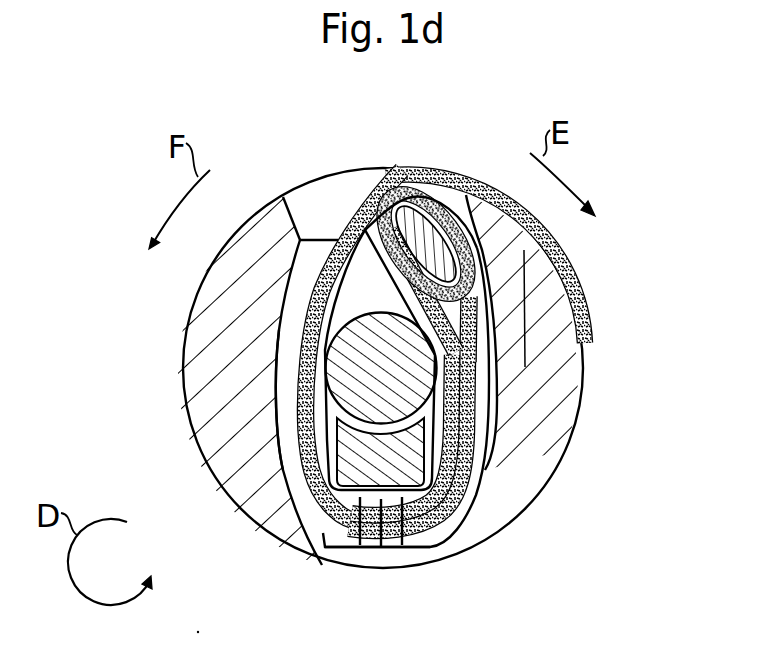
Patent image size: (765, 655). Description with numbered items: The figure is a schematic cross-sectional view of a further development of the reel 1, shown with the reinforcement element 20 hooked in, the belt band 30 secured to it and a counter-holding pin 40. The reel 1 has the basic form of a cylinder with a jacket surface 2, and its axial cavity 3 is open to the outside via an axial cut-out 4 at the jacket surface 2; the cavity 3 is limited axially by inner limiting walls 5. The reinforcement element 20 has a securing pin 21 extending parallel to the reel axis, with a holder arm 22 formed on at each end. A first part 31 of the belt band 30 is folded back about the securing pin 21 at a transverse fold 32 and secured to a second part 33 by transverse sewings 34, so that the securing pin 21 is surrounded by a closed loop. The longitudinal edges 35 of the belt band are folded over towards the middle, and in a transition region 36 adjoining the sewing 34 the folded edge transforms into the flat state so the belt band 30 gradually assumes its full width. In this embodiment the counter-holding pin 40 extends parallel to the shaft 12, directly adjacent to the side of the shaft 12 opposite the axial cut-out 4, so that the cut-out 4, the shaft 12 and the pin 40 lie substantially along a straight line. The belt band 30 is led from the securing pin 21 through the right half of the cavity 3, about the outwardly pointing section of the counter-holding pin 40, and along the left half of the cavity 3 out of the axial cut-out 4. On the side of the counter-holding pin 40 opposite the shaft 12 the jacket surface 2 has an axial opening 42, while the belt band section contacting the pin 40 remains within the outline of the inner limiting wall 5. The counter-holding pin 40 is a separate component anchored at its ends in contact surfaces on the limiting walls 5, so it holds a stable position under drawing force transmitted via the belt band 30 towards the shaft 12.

The reel 1 is at (537, 447).
The jacket surface 2 is at (207, 468).
The axial cavity 3 is at (510, 400).
The axial cut-out 4 is at (288, 197).
The inner limiting wall 5 is at (298, 530).
The shaft 12 is at (327, 385).
The reinforcement element 20 is at (368, 168).
The securing pin 21 is at (430, 212).
The holder arm 22 is at (346, 187).
The belt band 30 is at (578, 275).
The first part of the belt band 31 is at (491, 323).
The transverse fold 32 is at (400, 186).
The second part of the belt band 33 is at (379, 281).
The transverse sewing 34 is at (386, 545).
The longitudinal edge 35 is at (312, 357).
The transition region 36 is at (347, 220).
The counter-holding pin 40 is at (430, 525).
The axial opening 42 is at (322, 548).